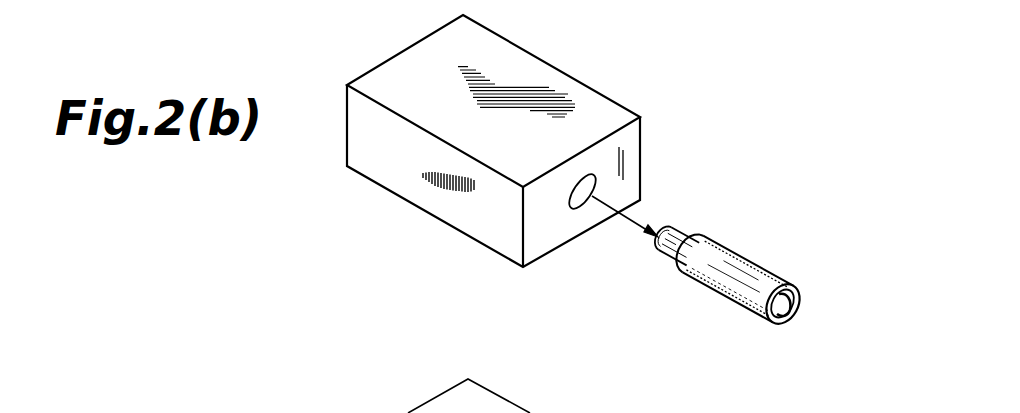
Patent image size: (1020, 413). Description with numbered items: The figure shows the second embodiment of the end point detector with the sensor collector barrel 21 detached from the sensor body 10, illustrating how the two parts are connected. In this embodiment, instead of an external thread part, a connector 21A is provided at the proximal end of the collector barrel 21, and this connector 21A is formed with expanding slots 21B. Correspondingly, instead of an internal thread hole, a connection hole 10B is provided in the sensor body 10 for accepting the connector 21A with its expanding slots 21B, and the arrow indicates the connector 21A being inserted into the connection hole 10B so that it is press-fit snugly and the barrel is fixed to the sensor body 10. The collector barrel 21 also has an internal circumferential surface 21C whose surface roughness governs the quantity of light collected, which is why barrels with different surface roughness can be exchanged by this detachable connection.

The sensor body 10 is at (502, 158).
The connection hole 10B is at (571, 208).
The sensor collector barrel 21 is at (748, 278).
The connector 21A is at (682, 258).
The expanding slots 21B is at (668, 228).
The internal circumferential surface 21C is at (790, 317).